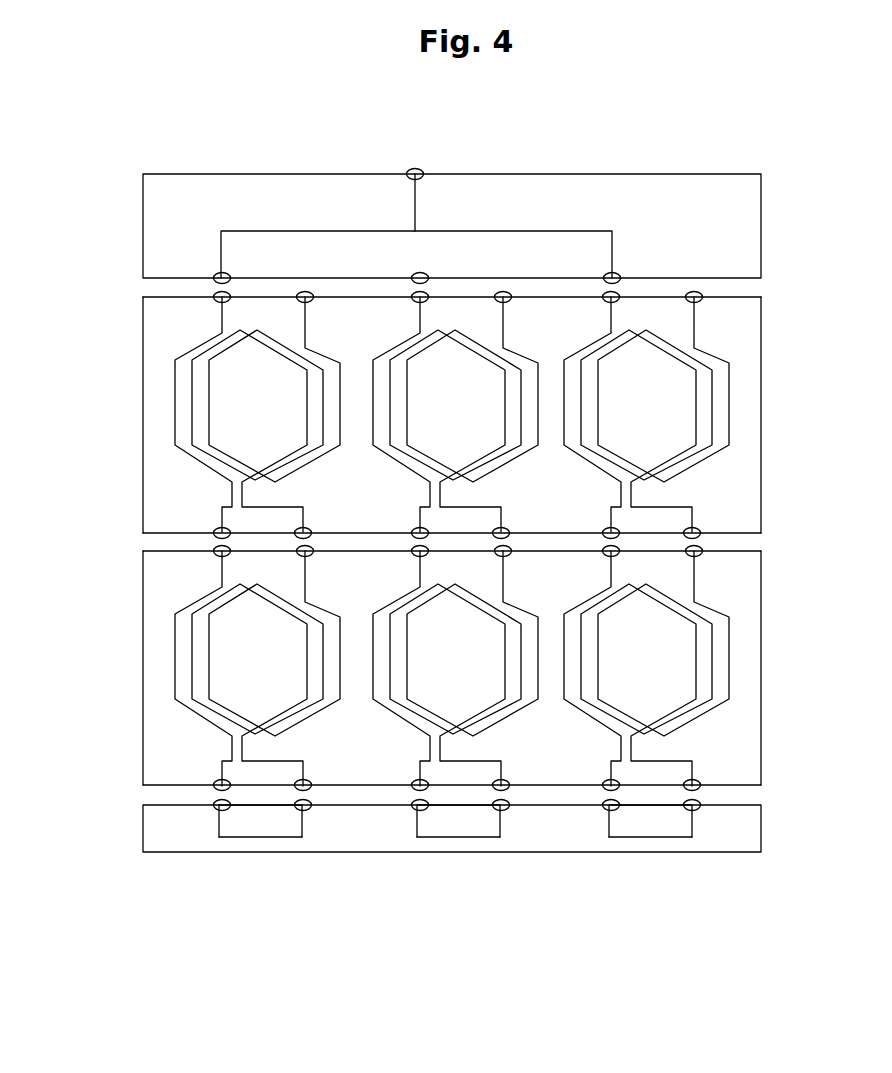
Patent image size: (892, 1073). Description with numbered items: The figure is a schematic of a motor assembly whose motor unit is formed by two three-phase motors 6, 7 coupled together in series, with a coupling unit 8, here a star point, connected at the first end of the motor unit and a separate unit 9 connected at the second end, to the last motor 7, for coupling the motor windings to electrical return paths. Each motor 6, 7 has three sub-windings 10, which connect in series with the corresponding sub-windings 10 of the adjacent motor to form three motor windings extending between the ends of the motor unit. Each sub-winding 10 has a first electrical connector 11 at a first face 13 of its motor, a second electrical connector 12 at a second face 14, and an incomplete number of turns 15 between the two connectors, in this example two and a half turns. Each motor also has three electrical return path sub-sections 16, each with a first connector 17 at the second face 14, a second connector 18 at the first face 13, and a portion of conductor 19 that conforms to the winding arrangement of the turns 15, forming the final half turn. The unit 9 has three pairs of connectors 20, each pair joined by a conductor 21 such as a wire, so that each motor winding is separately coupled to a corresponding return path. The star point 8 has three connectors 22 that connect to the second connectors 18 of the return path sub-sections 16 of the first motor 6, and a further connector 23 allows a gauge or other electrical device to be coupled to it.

The motor 6 is at (770, 297).
The motor 7 is at (770, 551).
The coupling unit 8 is at (770, 174).
The means for coupling motor windings to electrical return paths 9 is at (770, 805).
The sub-winding 10 is at (310, 461).
The first electrical connector 11 is at (304, 291).
The second electrical connector 12 is at (700, 538).
The first face 13 is at (175, 298).
The second face 14 is at (178, 533).
The turns 15 is at (236, 417).
The electrical return path sub-section 16 is at (186, 352).
The first connector 17 is at (216, 790).
The second connector 18 is at (216, 293).
The portion of conductor 19 is at (374, 402).
The pairs of connectors 20 is at (303, 811).
The conductor 21 is at (230, 838).
The connectors 22 is at (218, 274).
The further connector 23 is at (415, 168).